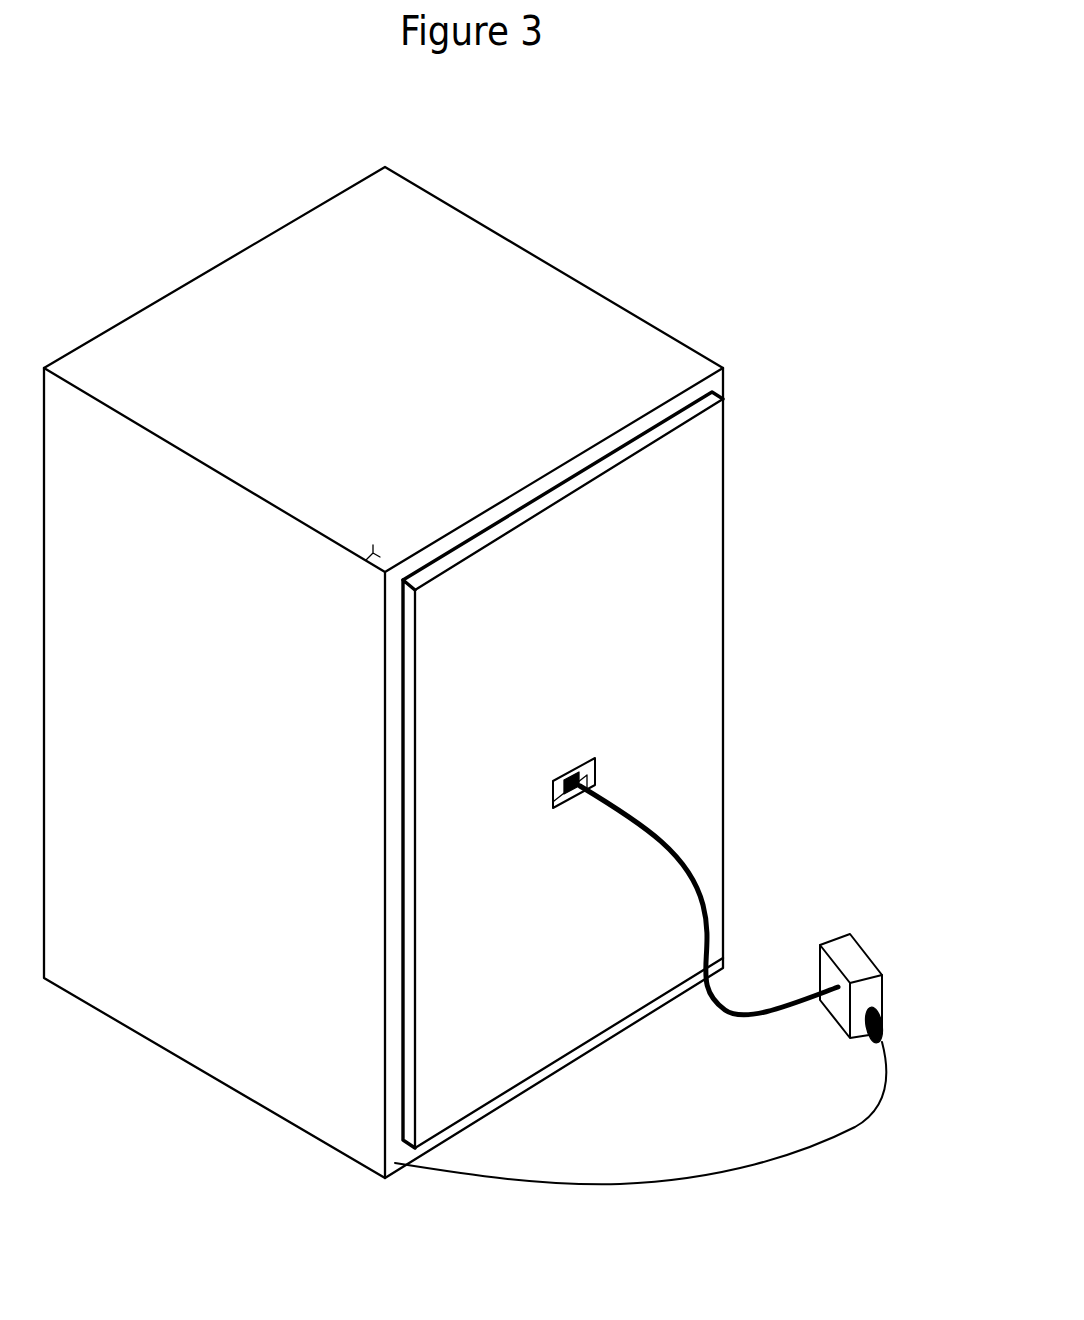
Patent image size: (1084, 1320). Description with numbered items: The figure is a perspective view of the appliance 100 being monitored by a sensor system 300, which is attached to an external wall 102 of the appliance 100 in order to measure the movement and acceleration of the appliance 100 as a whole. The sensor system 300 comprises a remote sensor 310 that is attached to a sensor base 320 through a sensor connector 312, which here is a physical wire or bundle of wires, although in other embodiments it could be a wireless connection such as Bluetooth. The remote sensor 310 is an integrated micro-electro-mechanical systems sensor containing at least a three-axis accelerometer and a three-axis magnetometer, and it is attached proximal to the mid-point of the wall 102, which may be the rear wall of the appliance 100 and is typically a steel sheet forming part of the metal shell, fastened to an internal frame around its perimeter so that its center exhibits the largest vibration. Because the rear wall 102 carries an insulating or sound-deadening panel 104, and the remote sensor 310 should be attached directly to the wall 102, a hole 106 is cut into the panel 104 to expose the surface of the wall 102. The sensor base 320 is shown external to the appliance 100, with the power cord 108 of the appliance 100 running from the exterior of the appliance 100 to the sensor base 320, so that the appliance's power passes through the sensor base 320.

The appliance 100 is at (500, 237).
The wall 102 is at (665, 410).
The panel 104 is at (690, 593).
The hole 106 is at (577, 770).
The power cord 108 is at (582, 1177).
The sensor system 300 is at (918, 922).
The remote sensor 310 is at (570, 798).
The sensor connector 312 is at (770, 1020).
The sensor base 320 is at (837, 942).